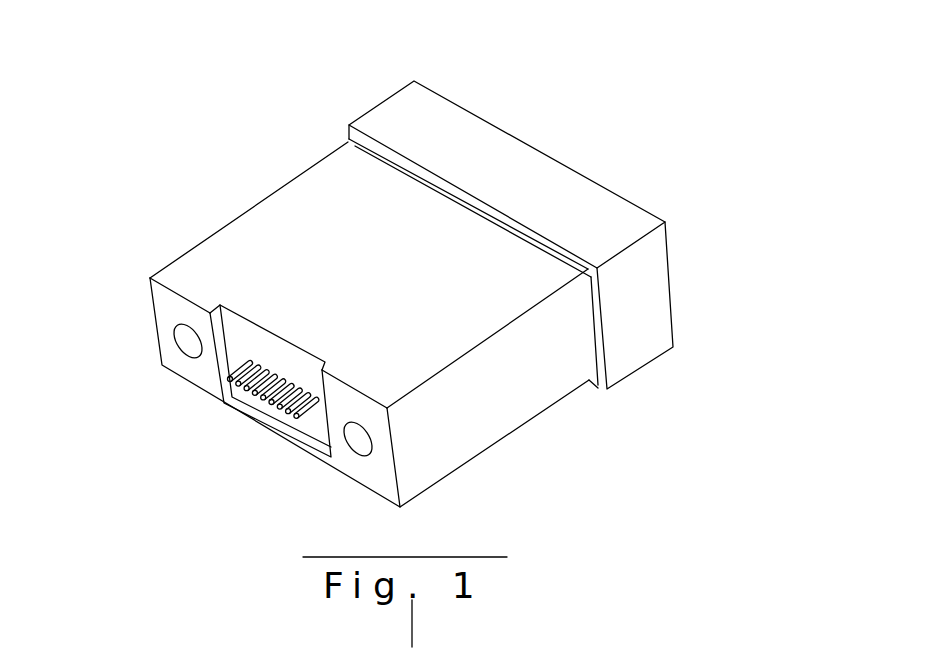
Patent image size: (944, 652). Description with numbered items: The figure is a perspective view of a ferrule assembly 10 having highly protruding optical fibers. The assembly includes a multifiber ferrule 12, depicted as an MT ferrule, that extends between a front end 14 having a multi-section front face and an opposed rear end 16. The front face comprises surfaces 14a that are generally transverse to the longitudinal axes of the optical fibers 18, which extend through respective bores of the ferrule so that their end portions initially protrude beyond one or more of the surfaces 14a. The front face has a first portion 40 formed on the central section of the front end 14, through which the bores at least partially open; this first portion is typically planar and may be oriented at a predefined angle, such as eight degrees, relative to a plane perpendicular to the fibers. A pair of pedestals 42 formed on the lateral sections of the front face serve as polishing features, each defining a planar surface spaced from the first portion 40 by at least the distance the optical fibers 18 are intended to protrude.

The ferrule assembly 10 is at (229, 185).
The multifiber ferrule 12 is at (485, 385).
The front end 14 is at (142, 266).
The front face surfaces 14a is at (167, 283).
The rear end 16 is at (486, 106).
The optical fibers 18 is at (302, 417).
The first portion 40 is at (258, 338).
The pedestals 42 is at (182, 353).